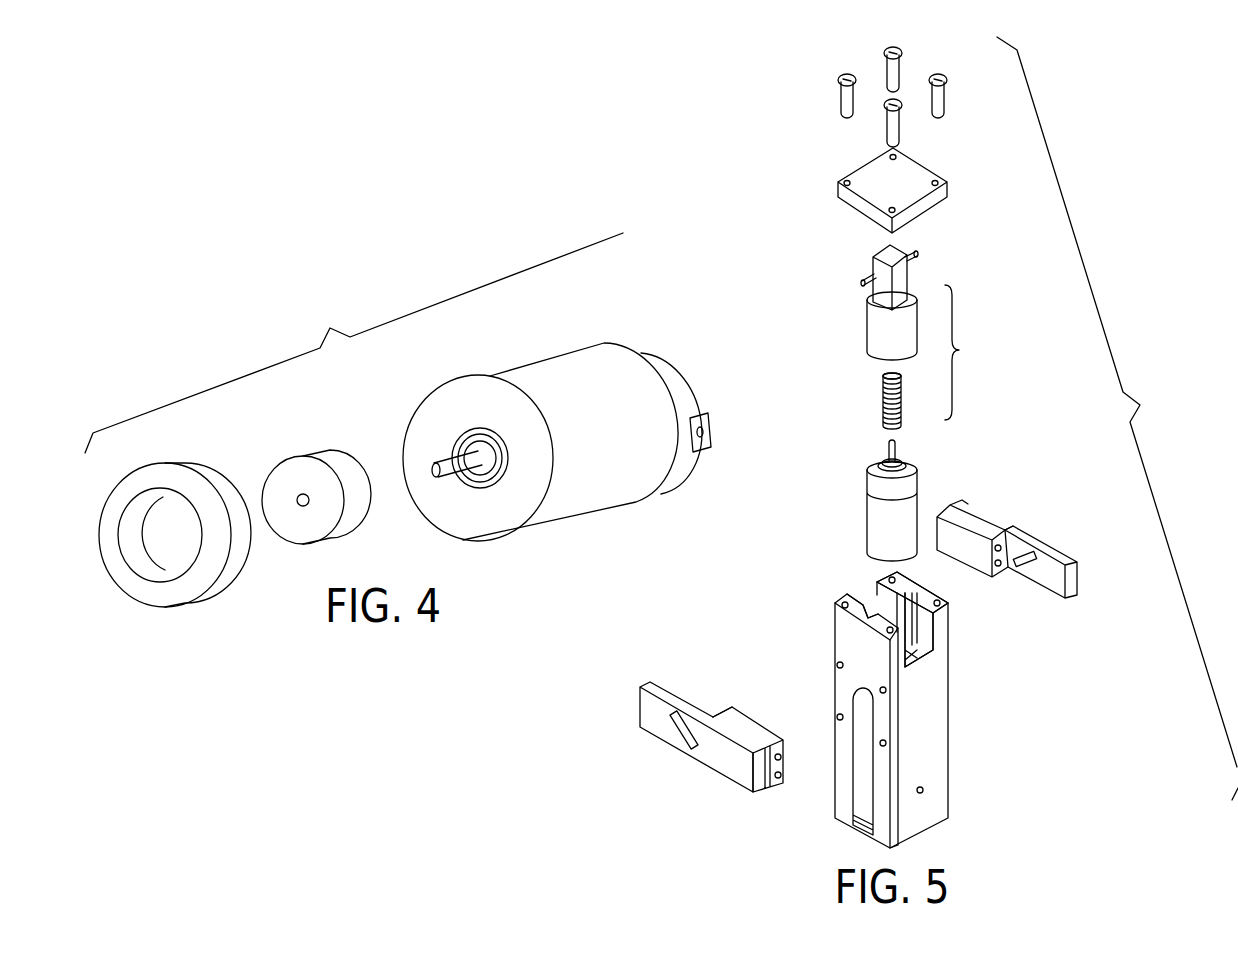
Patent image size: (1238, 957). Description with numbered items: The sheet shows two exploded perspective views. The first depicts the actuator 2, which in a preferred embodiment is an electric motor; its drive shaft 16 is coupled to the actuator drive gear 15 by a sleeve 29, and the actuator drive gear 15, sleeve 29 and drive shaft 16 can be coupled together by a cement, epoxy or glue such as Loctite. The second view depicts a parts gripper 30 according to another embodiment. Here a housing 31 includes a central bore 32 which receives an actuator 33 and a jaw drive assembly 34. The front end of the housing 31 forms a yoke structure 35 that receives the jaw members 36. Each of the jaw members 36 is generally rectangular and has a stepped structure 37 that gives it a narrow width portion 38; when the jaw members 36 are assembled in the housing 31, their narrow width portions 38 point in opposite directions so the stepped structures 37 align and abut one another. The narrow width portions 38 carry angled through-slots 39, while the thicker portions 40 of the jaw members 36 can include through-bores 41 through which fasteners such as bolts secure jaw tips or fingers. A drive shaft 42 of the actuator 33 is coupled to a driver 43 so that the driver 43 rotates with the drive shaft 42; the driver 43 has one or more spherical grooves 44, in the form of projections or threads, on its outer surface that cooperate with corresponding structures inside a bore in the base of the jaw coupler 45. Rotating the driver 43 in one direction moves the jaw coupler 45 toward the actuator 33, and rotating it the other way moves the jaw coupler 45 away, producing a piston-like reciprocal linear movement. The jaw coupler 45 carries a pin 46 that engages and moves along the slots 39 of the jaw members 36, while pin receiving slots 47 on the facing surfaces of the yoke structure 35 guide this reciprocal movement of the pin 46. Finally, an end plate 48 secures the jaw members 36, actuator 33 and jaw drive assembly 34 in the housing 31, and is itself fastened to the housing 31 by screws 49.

In FIG. 4, the actuator 2 is at (520, 358).
In FIG. 4, the actuator drive gear 15 is at (97, 548).
In FIG. 4, the drive shaft 16 is at (446, 478).
In FIG. 4, the sleeve 29 is at (283, 465).
In FIG. 5, the parts gripper 30 is at (1130, 727).
In FIG. 5, the housing 31 is at (948, 778).
In FIG. 5, the central bore 32 is at (920, 645).
In FIG. 5, the actuator 33 is at (866, 522).
In FIG. 5, the jaw drive assembly 34 is at (970, 352).
In FIG. 5, the yoke structure 35 is at (862, 589).
In FIG. 5, the jaw members 36 is at (871, 639).
In FIG. 5, the stepped structure 37 is at (1005, 528).
In FIG. 5, the narrow width portion 38 is at (1065, 600).
In FIG. 5, the angled through-slots 39 is at (1027, 567).
In FIG. 5, the thicker portion 40 is at (977, 517).
In FIG. 5, the through-bores 41 is at (1015, 530).
In FIG. 5, the drive shaft 42 is at (887, 445).
In FIG. 5, the driver 43 is at (883, 402).
In FIG. 5, the spherical grooves 44 is at (901, 398).
In FIG. 5, the jaw coupler 45 is at (866, 332).
In FIG. 5, the pin 46 is at (866, 278).
In FIG. 5, the pin receiving slots 47 is at (923, 590).
In FIG. 5, the end plate 48 is at (933, 168).
In FIG. 5, the screws 49 is at (841, 103).